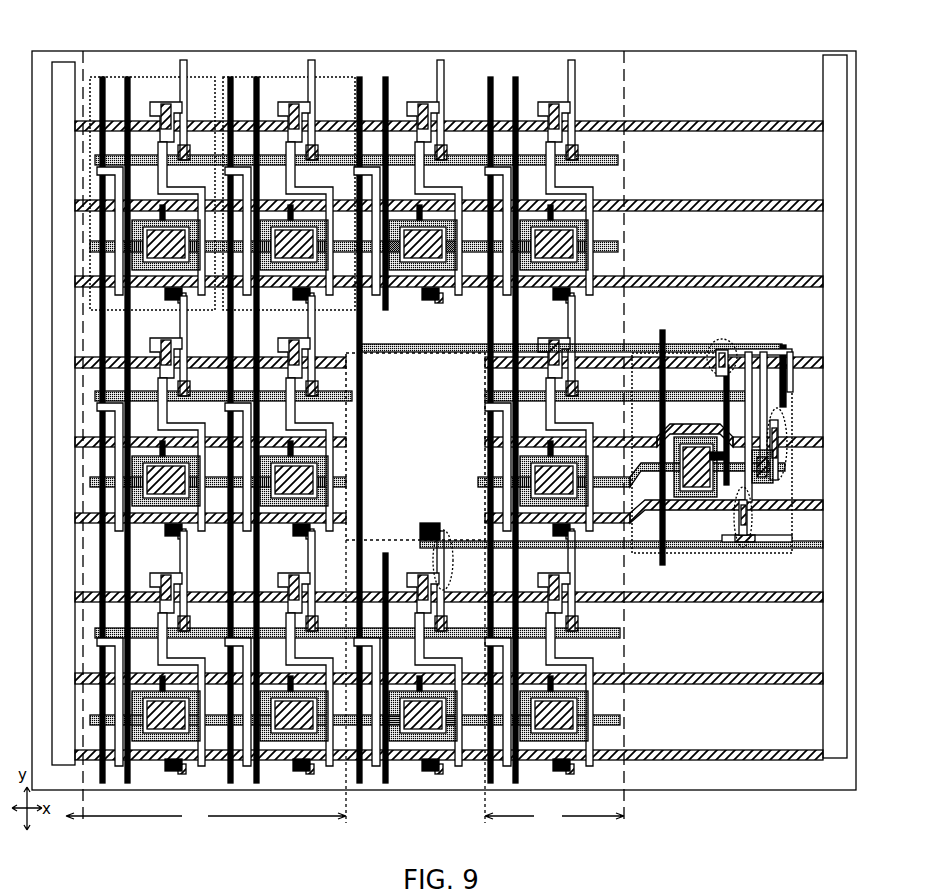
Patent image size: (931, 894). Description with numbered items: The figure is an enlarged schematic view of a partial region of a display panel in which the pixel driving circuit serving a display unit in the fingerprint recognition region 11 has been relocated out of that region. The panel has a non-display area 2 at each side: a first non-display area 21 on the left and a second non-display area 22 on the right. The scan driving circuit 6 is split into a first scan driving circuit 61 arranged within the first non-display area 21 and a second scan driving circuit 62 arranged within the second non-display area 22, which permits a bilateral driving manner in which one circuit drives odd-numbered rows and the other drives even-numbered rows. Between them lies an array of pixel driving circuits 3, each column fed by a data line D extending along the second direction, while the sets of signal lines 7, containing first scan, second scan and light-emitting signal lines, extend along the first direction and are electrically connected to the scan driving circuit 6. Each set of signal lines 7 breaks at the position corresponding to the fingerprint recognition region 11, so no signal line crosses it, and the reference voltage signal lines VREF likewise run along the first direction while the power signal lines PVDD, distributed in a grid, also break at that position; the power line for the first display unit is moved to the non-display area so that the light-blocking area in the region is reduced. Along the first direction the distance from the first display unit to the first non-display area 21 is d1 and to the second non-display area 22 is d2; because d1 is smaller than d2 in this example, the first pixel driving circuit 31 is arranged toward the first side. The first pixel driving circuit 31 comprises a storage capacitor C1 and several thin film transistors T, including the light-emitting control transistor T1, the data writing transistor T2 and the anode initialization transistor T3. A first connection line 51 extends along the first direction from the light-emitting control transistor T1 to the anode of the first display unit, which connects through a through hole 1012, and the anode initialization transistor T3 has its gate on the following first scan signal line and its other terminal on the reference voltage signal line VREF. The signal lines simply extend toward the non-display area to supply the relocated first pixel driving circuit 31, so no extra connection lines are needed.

The non-display area 2 is at (444, 404).
The first non-display area 21 is at (60, 414).
The second non-display area 22 is at (741, 78).
The scan driving circuit 6 is at (452, 385).
The first scan driving circuit 61 is at (62, 62).
The second scan driving circuit 62 is at (830, 70).
The pixel driving circuit 3 is at (278, 76).
The set of signal lines 7 is at (622, 754).
The fingerprint recognition region 11 is at (415, 588).
The through hole 1012 is at (420, 532).
The first connection line 51 is at (604, 549).
The first pixel driving circuit 31 is at (724, 451).
The thin film transistor T is at (724, 340).
The light-emitting control transistor T1 is at (750, 548).
The data writing transistor T2 is at (789, 436).
The anode initialization transistor T3 is at (453, 570).
The storage capacitor C1 is at (780, 466).
The data line D is at (103, 76).
The power signal line PVDD is at (622, 719).
The reference voltage signal line VREF is at (622, 633).
The distance between the first display unit and the first non-display area d1 is at (206, 817).
The distance between the first display unit and the second non-display area d2 is at (554, 817).